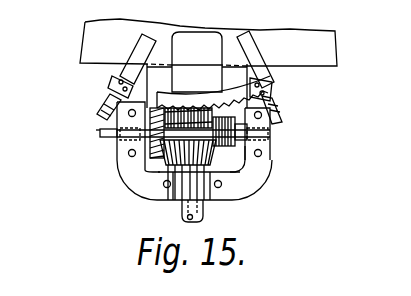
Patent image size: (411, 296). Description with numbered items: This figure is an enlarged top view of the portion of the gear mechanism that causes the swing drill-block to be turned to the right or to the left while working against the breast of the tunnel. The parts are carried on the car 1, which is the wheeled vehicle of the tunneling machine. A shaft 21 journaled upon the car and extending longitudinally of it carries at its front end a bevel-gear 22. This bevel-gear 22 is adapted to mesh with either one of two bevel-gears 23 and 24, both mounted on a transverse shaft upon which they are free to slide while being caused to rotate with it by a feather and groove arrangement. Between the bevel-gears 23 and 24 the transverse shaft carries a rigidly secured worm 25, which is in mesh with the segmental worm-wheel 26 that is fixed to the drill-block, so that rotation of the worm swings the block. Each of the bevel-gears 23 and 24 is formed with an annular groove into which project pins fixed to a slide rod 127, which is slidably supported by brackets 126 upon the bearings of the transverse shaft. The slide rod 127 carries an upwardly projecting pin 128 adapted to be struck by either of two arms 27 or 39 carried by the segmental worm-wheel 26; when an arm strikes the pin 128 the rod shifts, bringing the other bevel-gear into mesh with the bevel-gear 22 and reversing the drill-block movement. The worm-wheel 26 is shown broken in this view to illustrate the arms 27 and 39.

The car 1 is at (85, 37).
The segmental worm-wheel 26 is at (143, 50).
The arm 27 is at (113, 107).
The slide rod 127 is at (107, 137).
The brackets 126 is at (150, 124).
The bevel-gear 24 is at (160, 138).
The upwardly projecting pin 128 is at (172, 133).
The arm 39 is at (272, 118).
The bevel-gear 23 is at (262, 153).
The worm 25 is at (248, 165).
The bevel-gear 22 is at (232, 176).
The shaft 21 is at (203, 212).